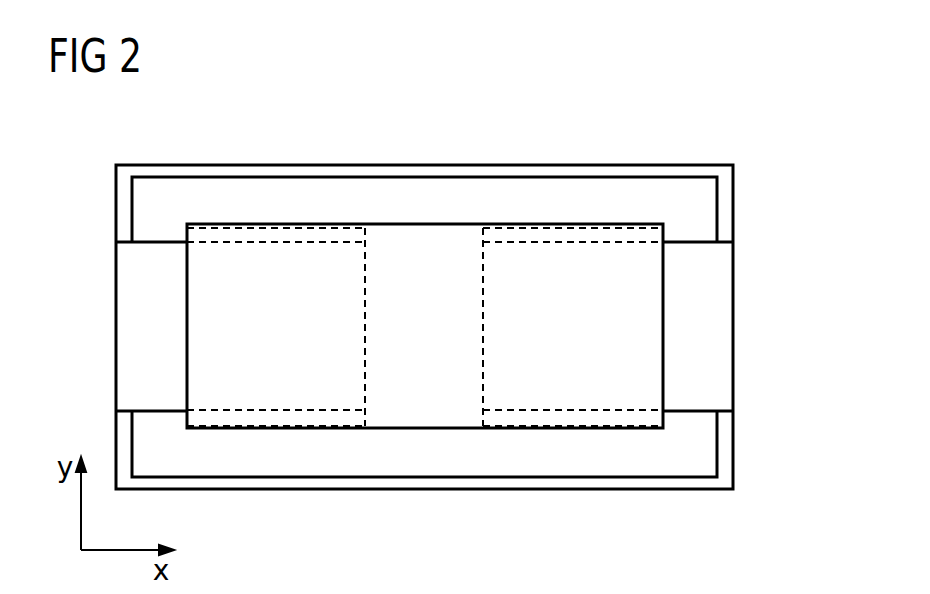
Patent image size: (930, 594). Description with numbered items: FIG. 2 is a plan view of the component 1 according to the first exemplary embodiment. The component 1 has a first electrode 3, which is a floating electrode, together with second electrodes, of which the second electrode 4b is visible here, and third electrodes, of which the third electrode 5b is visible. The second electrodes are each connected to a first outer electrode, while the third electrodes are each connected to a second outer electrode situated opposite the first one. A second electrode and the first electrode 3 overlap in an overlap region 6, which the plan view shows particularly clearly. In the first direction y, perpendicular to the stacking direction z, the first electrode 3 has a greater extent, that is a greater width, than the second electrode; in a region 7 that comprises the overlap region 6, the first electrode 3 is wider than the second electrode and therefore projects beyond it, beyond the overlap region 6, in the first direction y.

The component 1 is at (606, 138).
The first electrode 3 is at (422, 417).
The second electrode 4b is at (128, 318).
The third electrode 5b is at (722, 318).
The overlap region 6 is at (257, 244).
The region 7 is at (291, 226).